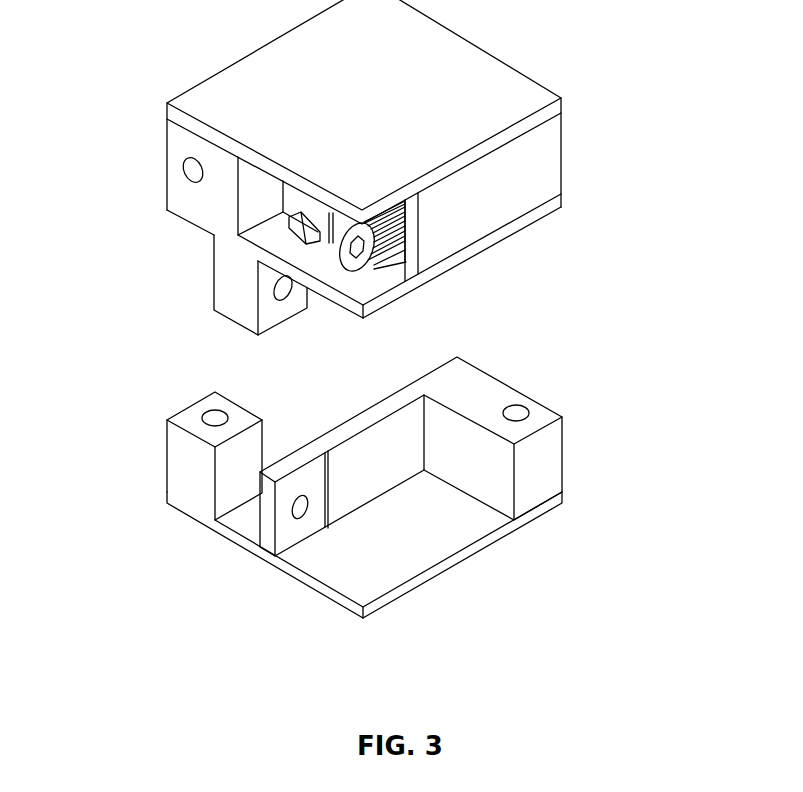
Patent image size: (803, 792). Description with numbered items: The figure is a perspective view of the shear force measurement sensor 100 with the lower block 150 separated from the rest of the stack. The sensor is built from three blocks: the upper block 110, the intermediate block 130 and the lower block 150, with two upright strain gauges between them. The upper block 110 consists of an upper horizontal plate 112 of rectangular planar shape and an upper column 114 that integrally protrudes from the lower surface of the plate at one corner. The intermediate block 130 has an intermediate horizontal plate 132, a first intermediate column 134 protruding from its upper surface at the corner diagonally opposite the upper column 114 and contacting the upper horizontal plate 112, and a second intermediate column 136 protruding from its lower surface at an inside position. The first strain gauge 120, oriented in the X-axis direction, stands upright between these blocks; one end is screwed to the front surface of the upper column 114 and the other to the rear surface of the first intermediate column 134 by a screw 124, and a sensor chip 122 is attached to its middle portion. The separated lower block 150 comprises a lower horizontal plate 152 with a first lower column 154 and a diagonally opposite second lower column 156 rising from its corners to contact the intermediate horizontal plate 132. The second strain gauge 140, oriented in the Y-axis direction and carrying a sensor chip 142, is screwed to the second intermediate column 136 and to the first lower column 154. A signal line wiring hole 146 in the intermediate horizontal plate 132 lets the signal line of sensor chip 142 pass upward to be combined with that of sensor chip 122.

The shear force measurement sensor 100 is at (673, 0).
The upper block 110 is at (521, 199).
The upper horizontal plate 112 is at (203, 103).
The upper column 114 is at (468, 231).
The first strain gauge 120 is at (320, 250).
The sensor chip 122 is at (296, 202).
The screw 124 is at (372, 278).
The intermediate block 130 is at (180, 225).
The intermediate horizontal plate 132 is at (440, 278).
The first intermediate column 134 is at (183, 193).
The second intermediate column 136 is at (228, 278).
The second strain gauge 140 is at (398, 465).
The sensor chip 142 is at (374, 501).
The signal line wiring hole 146 is at (270, 262).
The lower block 150 is at (203, 538).
The lower horizontal plate 152 is at (360, 587).
The first lower column 154 is at (500, 477).
The second lower column 156 is at (181, 448).